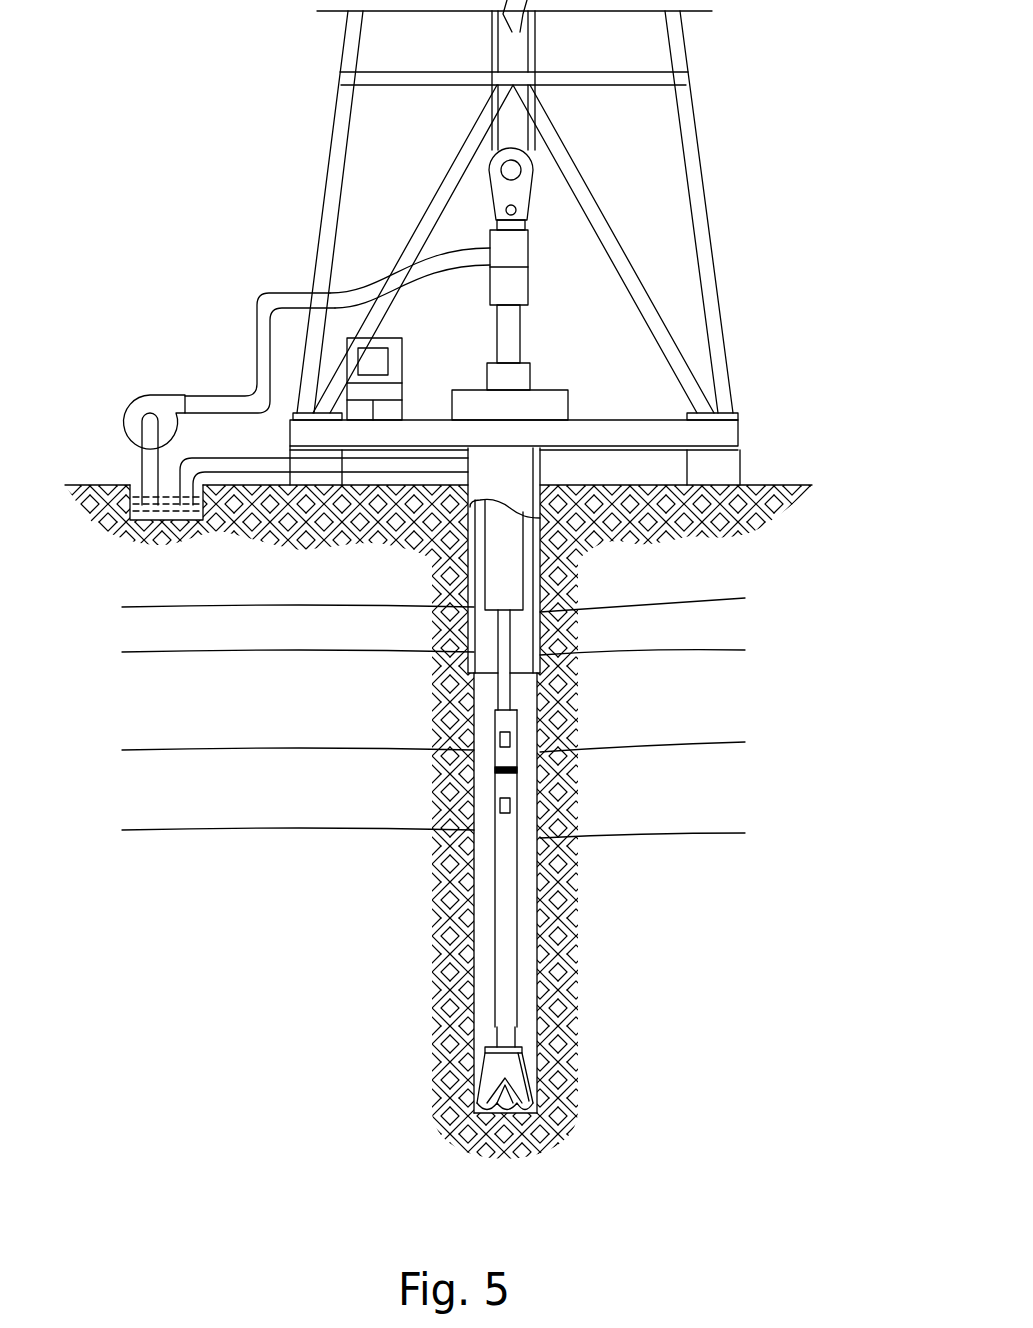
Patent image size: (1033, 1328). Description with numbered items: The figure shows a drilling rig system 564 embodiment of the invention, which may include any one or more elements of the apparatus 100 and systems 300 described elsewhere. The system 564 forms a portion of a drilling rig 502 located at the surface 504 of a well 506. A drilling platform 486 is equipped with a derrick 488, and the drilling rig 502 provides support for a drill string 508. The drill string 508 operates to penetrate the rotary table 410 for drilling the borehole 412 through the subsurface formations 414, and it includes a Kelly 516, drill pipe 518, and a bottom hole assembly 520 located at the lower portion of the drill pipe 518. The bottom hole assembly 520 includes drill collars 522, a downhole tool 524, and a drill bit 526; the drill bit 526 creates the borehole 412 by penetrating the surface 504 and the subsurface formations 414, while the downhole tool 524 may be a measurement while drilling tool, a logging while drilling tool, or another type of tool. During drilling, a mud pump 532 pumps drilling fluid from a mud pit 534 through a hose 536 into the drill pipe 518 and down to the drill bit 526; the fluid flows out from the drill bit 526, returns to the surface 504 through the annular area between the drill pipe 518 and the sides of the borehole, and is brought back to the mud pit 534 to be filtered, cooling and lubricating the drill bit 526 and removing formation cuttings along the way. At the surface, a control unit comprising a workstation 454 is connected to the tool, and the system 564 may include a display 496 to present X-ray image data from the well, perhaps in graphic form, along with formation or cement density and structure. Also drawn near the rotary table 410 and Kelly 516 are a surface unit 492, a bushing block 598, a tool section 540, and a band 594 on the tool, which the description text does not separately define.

The drilling rig system 564 is at (200, 103).
The derrick 488 is at (697, 98).
The drilling rig 502 is at (453, 210).
The workstation 454 is at (347, 347).
The hose 536 is at (257, 338).
The mud pump 532 is at (152, 393).
The mud pit 534 is at (153, 513).
The control unit 492 is at (417, 350).
The display 496 is at (388, 362).
The rotary table 410 is at (480, 389).
The kelly bushing 598 is at (532, 378).
The Kelly 516 is at (522, 330).
The drilling platform 486 is at (742, 420).
The surface 504 is at (765, 485).
The well 506 is at (556, 475).
The drill collars 522 is at (525, 565).
The drill pipe 518 is at (507, 647).
The bottom hole assembly 540 is at (617, 846).
The apparatus 100 is at (510, 740).
The systems 300 is at (510, 805).
The coupling band 594 is at (515, 770).
The drill string 508 is at (521, 896).
The borehole 412 is at (540, 973).
The downhole tool 524 is at (505, 1007).
The drill bit 526 is at (513, 1070).
The bottom hole assembly 520 is at (428, 675).
The subsurface formations 414 is at (105, 603).